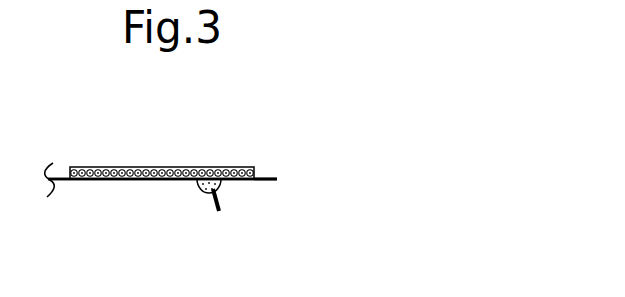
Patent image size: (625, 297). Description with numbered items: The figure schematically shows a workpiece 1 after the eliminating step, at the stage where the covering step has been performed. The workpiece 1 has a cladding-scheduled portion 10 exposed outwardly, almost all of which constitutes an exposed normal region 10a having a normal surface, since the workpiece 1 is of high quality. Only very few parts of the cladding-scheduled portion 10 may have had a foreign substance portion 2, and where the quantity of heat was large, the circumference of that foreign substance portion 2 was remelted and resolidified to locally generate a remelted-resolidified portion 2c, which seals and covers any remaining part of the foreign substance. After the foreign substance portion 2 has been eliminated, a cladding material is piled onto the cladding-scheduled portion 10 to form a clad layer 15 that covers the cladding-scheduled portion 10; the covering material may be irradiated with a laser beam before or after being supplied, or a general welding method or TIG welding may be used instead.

The workpiece 1 is at (277, 185).
The foreign substance portion 2 is at (218, 211).
The remelted-resolidified portion 2c is at (200, 190).
The cladding-scheduled portion 10 is at (273, 179).
The exposed normal region 10a is at (262, 178).
The clad layer 15 is at (148, 167).